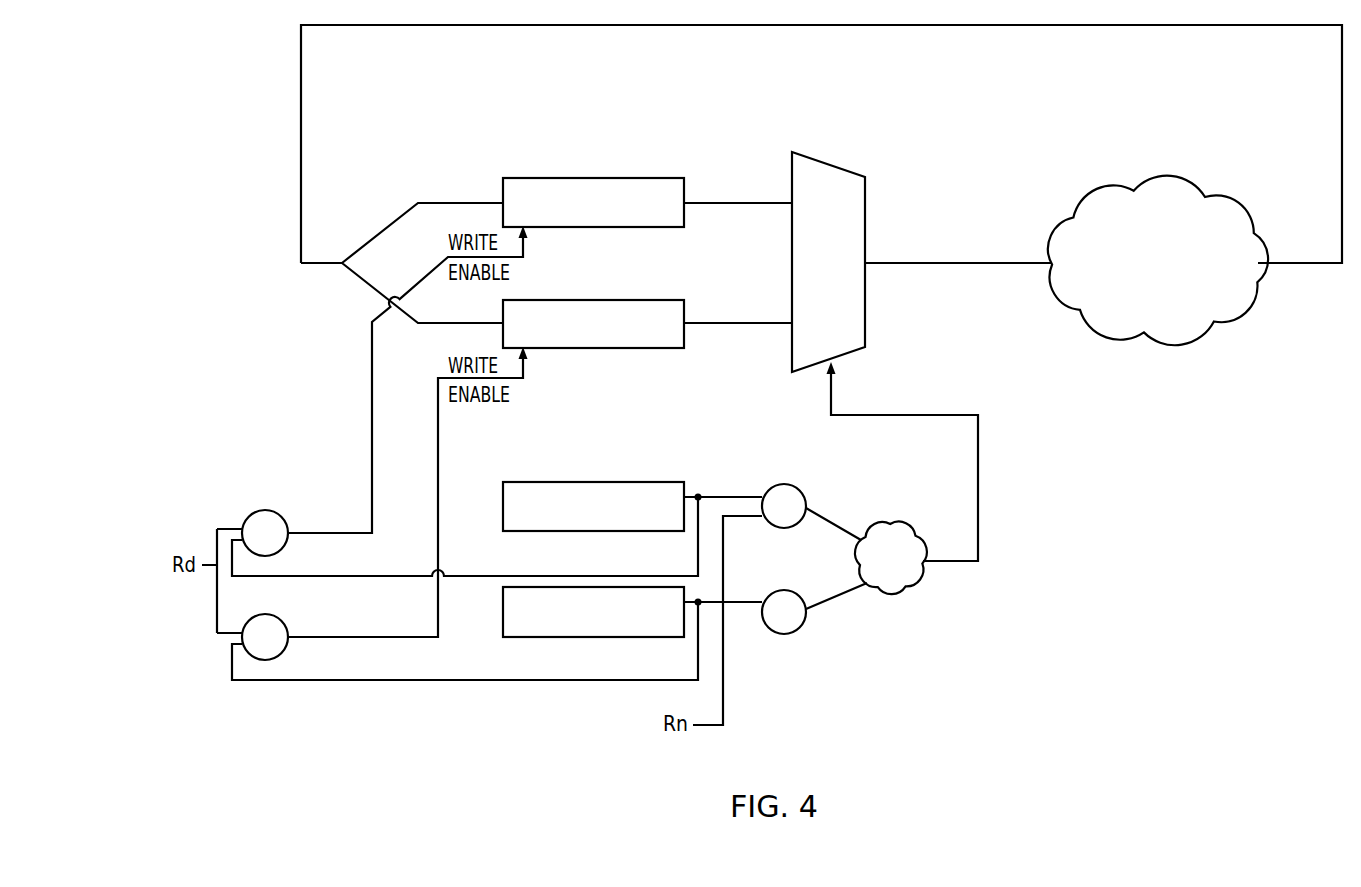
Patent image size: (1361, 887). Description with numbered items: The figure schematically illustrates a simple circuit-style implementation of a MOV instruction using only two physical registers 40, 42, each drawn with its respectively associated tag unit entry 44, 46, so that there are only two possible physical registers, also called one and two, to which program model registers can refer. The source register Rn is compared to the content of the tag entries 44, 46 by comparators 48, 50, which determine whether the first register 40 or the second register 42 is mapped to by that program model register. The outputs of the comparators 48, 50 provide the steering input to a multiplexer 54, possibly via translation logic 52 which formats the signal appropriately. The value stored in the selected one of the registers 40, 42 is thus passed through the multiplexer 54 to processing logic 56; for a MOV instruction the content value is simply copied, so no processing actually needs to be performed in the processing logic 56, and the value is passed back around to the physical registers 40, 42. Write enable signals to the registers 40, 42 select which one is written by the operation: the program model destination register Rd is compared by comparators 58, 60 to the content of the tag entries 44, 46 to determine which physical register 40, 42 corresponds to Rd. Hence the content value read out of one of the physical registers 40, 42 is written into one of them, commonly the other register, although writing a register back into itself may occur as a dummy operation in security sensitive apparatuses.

The physical register 40 is at (592, 178).
The physical register 42 is at (592, 300).
The tag unit entry 44 is at (503, 502).
The tag unit entry 46 is at (503, 610).
The comparator 48 is at (783, 484).
The comparator 50 is at (784, 634).
The translation logic 52 is at (899, 594).
The multiplexer 54 is at (824, 154).
The processing logic 56 is at (1128, 182).
The comparator 58 is at (280, 514).
The comparator 60 is at (280, 618).